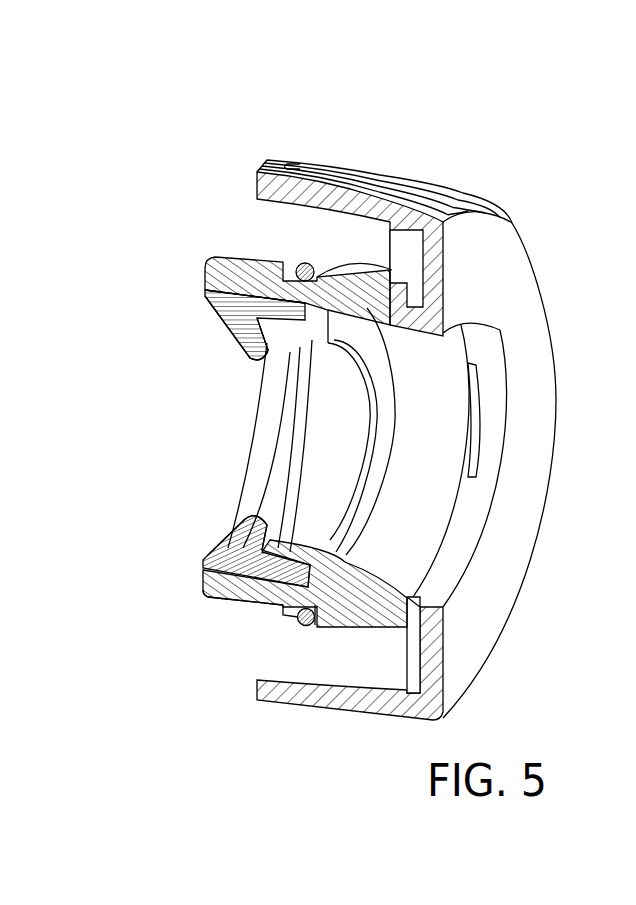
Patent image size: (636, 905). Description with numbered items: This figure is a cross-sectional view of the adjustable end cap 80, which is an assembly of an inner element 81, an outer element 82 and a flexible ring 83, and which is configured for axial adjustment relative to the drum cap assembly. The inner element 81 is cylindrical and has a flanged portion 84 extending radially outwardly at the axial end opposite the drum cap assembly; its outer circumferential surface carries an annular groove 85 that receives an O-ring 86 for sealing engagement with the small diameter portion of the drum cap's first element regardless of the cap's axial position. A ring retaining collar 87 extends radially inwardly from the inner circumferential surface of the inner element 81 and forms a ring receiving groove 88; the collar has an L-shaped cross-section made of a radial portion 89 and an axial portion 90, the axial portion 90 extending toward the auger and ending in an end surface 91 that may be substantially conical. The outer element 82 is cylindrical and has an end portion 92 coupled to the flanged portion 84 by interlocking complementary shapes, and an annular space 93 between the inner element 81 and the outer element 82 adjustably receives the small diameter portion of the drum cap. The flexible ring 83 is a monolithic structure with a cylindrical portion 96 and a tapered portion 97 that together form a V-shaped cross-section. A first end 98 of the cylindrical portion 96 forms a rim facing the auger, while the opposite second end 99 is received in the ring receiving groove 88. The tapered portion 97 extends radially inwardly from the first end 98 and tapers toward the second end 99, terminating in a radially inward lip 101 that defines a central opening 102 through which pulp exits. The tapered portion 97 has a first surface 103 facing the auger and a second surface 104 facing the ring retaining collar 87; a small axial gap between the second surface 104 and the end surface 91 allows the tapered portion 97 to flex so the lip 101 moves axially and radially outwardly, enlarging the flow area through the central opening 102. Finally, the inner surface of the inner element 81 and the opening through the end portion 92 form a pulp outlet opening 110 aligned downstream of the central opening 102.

The adjustable end cap 80 is at (441, 388).
The inner element 81 is at (220, 278).
The outer element 82 is at (284, 186).
The flexible ring 83 is at (228, 558).
The flanged portion 84 is at (433, 250).
The annular groove 85 is at (307, 640).
The O-ring 86 is at (298, 628).
The ring retaining collar 87 is at (272, 540).
The ring receiving groove 88 is at (288, 533).
The radial portion 89 is at (262, 552).
The axial portion 90 is at (262, 432).
The end surface 91 is at (240, 510).
The end portion 92 is at (513, 273).
The annular space 93 is at (369, 240).
The cylindrical portion 96 is at (256, 302).
The tapered portion 97 is at (250, 342).
The first end 98 is at (207, 298).
The second end 99 is at (305, 303).
The lip 101 is at (262, 363).
The central opening 102 is at (259, 355).
The first surface 103 is at (235, 530).
The second surface 104 is at (270, 577).
The pulp outlet opening 110 is at (460, 543).